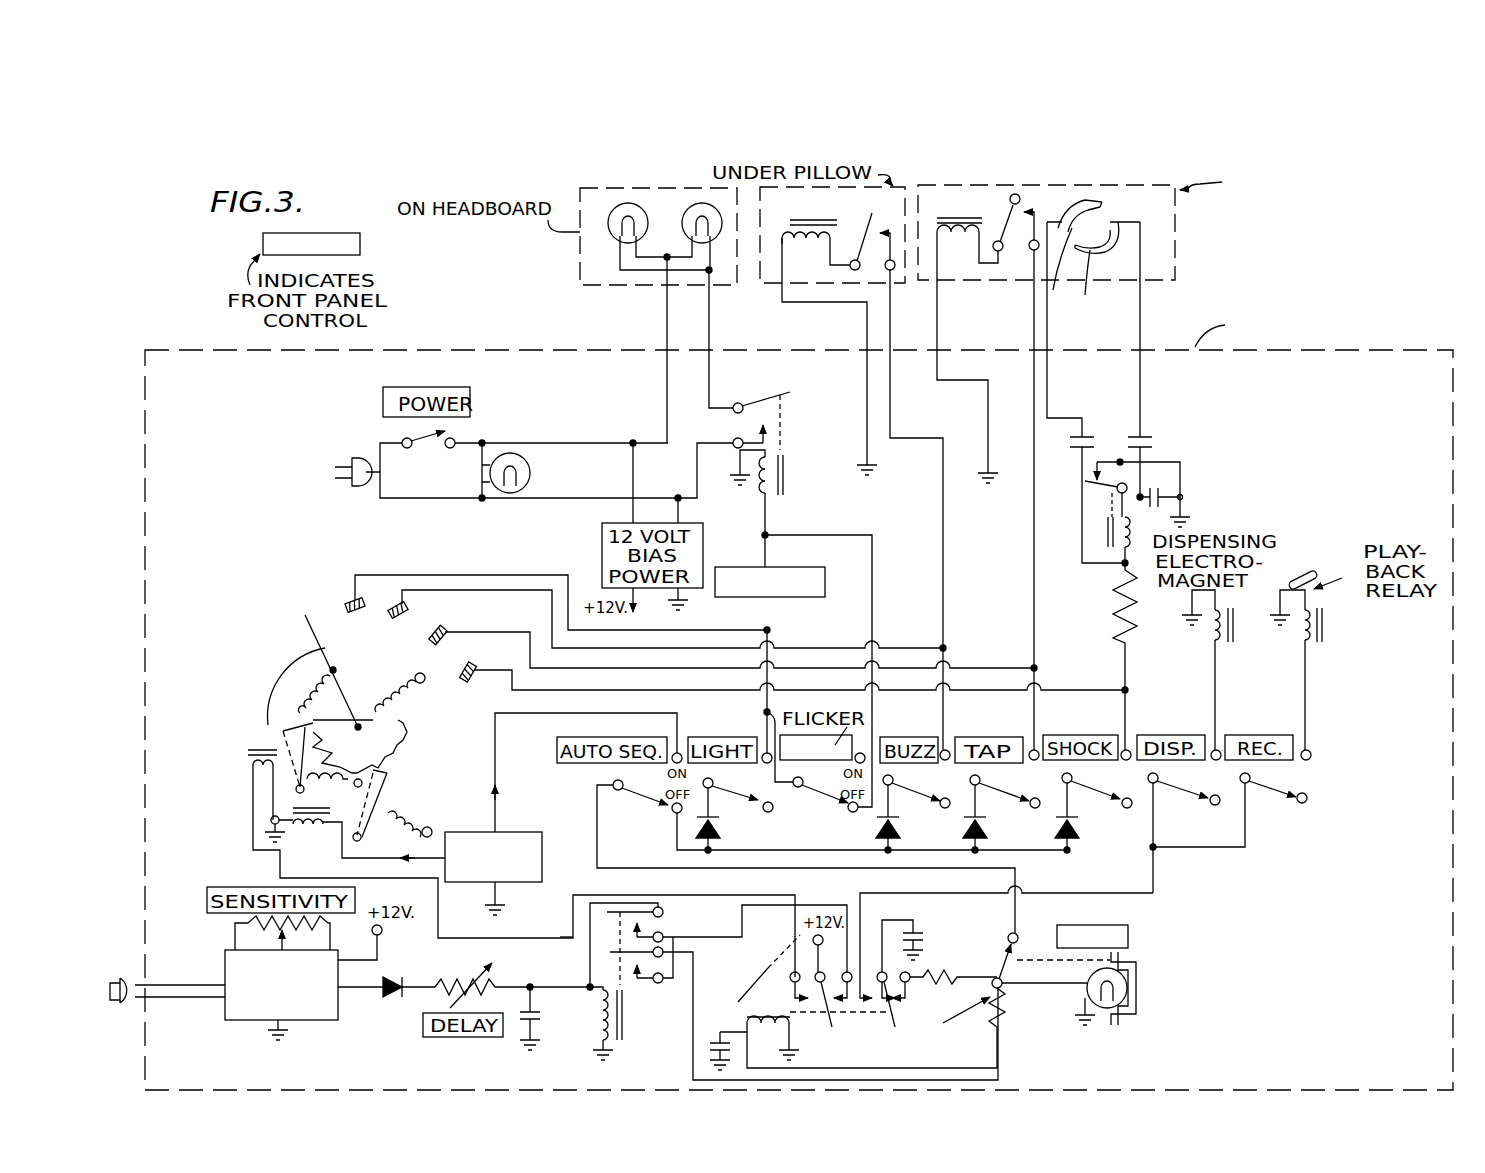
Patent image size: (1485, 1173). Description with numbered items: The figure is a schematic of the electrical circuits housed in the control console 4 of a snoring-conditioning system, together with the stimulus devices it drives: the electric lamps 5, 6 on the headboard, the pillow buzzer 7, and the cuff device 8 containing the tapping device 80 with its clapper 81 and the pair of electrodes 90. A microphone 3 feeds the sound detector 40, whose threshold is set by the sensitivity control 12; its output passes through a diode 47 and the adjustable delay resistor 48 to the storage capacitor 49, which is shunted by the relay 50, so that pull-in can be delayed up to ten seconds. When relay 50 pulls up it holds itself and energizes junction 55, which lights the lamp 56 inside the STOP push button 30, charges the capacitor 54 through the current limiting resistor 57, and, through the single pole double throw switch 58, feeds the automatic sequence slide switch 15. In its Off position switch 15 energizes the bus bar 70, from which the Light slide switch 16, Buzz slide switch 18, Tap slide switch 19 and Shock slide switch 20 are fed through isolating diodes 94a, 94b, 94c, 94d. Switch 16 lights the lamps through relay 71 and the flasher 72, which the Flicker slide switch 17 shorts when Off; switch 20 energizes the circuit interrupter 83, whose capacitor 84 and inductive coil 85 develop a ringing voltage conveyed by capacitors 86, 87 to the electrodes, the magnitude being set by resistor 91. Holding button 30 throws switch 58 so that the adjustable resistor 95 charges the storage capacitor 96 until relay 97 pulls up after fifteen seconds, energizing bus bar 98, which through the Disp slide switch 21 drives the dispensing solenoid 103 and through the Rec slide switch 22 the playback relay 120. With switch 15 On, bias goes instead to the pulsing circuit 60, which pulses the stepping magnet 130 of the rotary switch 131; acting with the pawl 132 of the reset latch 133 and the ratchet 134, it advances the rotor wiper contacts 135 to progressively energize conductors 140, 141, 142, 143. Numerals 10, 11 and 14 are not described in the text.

The microphone 3 is at (135, 975).
The control console 4 is at (1386, 348).
The electric lamp 5 is at (638, 203).
The electric lamp 6 is at (688, 203).
The pillow buzzer 7 is at (822, 258).
The cuff device 8 is at (1178, 260).
The power switch 10 is at (443, 442).
The power indicator lamp 11 is at (532, 470).
The sensitivity control 12 is at (277, 942).
The delay potentiometer wiper 14 is at (480, 971).
The automatic sequence slide switch 15 is at (660, 800).
The Light slide switch 16 is at (723, 797).
The Flicker slide switch 17 is at (823, 800).
The Buzz slide switch 18 is at (917, 797).
The Tap slide switch 19 is at (1003, 797).
The Shock slide switch 20 is at (1095, 795).
The Disp slide switch 21 is at (1173, 795).
The Rec slide switch 22 is at (1261, 795).
The STOP push button 30 is at (1133, 962).
The sound detector 40 is at (310, 1020).
The diode 47 is at (396, 1002).
The adjustable delay resistor 48 is at (460, 982).
The storage capacitor 49 is at (533, 1008).
The relay 50 is at (648, 995).
The capacitor 54 is at (913, 928).
The junction 55 is at (1002, 986).
The lamp 56 is at (1098, 1008).
The current limiting resistor 57 is at (925, 970).
The single pole double throw switch 58 is at (1015, 967).
The pulsing circuit 60 is at (505, 832).
The bus bar 70 is at (687, 852).
The relay 71 is at (791, 423).
The flasher 72 is at (803, 597).
The tapping device 80 is at (1013, 260).
The clapper 81 is at (1010, 199).
The electromechanical circuit interrupter 83 is at (1162, 450).
The capacitor 84 is at (1163, 493).
The energizing coil 85 is at (1108, 541).
The safety isolation and current limiting capacitor 86 is at (1090, 432).
The safety isolation and current limiting capacitor 87 is at (1146, 433).
The electrodes 90 is at (1093, 318).
The resistor 91 is at (1118, 590).
The diode 94a is at (726, 830).
The diode 94b is at (878, 827).
The diode 94c is at (987, 830).
The diode 94d is at (1074, 830).
The adjustable current limiting resistor 95 is at (945, 1013).
The storage capacitor 96 is at (715, 1032).
The relay 97 is at (795, 968).
The bus bar 98 is at (1198, 847).
The dispensing solenoid 103 is at (1207, 625).
The playback relay 120 is at (1293, 625).
The stepping magnet 130 is at (338, 846).
The rotary switch 131 is at (296, 552).
The pawl 132 is at (337, 718).
The reset latch 133 is at (262, 775).
The ratchet 134 is at (380, 730).
The rotor wiper contact 135 is at (312, 627).
The conductor 140 is at (415, 575).
The conductor 141 is at (478, 592).
The conductor 142 is at (487, 632).
The conductor 143 is at (488, 672).